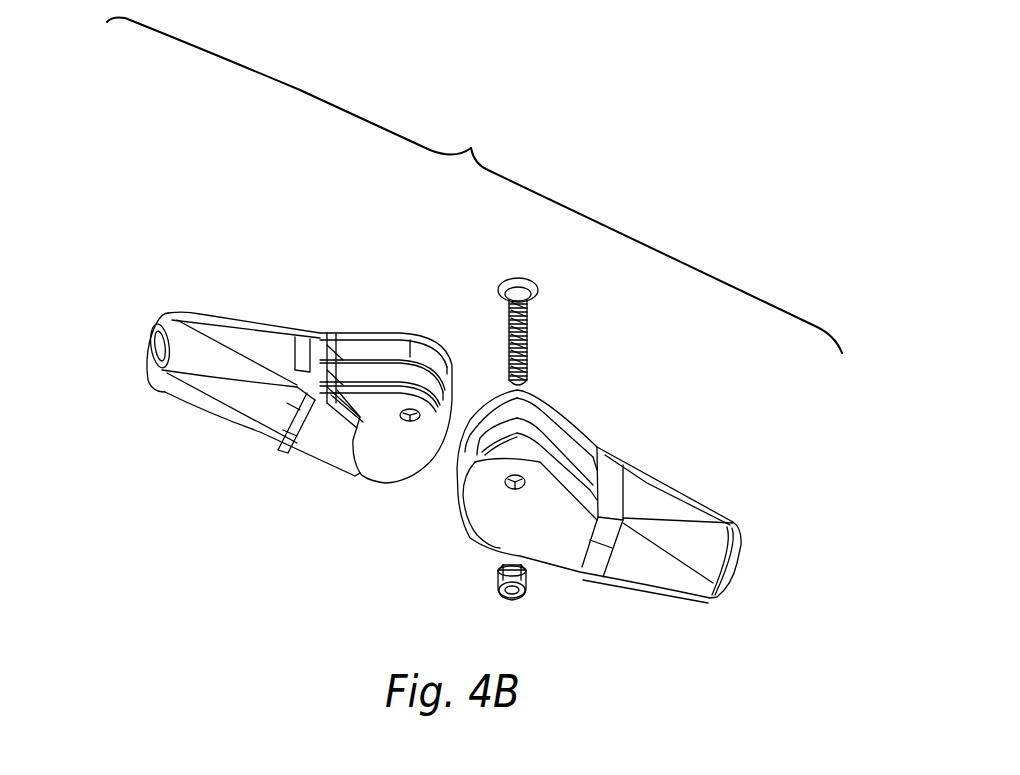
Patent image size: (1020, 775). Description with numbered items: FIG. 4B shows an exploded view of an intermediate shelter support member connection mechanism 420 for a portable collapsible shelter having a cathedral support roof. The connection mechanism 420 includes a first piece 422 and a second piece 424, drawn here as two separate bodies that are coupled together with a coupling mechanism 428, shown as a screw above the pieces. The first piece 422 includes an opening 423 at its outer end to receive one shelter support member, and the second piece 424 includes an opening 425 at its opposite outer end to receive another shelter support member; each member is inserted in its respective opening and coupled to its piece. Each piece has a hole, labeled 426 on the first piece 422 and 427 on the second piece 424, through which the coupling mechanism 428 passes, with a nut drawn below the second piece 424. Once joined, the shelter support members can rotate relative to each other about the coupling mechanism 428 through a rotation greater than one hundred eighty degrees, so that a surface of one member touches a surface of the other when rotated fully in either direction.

The connection mechanism 420 is at (259, 211).
The first piece 422 is at (223, 320).
The opening 423 is at (151, 338).
The second piece 424 is at (663, 590).
The opening 425 is at (743, 586).
The first aperture 426 is at (410, 421).
The second aperture 427 is at (515, 490).
The coupling mechanism 428 is at (529, 336).